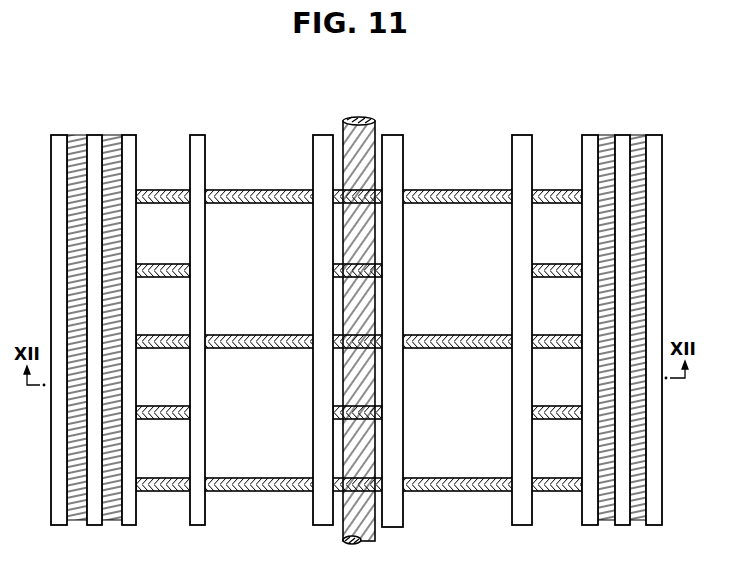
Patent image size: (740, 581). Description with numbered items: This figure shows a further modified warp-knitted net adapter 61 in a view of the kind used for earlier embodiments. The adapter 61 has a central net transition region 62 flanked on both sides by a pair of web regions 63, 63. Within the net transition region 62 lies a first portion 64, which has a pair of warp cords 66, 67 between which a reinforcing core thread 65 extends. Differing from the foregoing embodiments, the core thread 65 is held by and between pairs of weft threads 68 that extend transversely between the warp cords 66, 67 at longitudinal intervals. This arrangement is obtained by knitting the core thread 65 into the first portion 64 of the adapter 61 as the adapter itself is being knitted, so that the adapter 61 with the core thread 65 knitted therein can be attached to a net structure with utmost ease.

The adapter 61 is at (677, 330).
The net transition region 62 is at (360, 310).
The web regions 63 is at (127, 83).
The first portion 64 is at (354, 326).
The reinforcing core thread 65 is at (355, 344).
The warp cord 66 is at (302, 343).
The warp cord 67 is at (409, 347).
The weft threads 68 is at (359, 342).